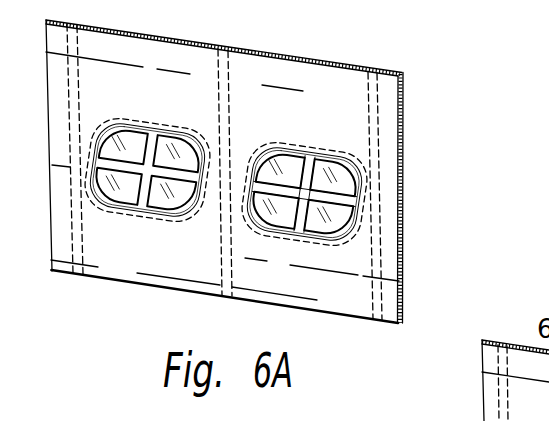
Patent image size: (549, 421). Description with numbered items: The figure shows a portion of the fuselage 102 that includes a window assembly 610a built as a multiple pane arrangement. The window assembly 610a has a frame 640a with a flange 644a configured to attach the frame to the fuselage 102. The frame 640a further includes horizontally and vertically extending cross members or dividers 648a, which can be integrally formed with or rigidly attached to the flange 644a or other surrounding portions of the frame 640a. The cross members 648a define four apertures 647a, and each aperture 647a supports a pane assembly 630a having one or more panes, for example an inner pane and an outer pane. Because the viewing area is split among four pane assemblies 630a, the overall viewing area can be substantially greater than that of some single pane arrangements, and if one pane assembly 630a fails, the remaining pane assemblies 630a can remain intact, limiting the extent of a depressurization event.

The fuselage 102 is at (293, 167).
The window assembly 610a is at (363, 155).
The pane assembly 630a is at (258, 150).
The frame 640a is at (289, 181).
The flange 644a is at (345, 160).
The aperture 647a is at (285, 156).
The cross member 648a is at (263, 182).